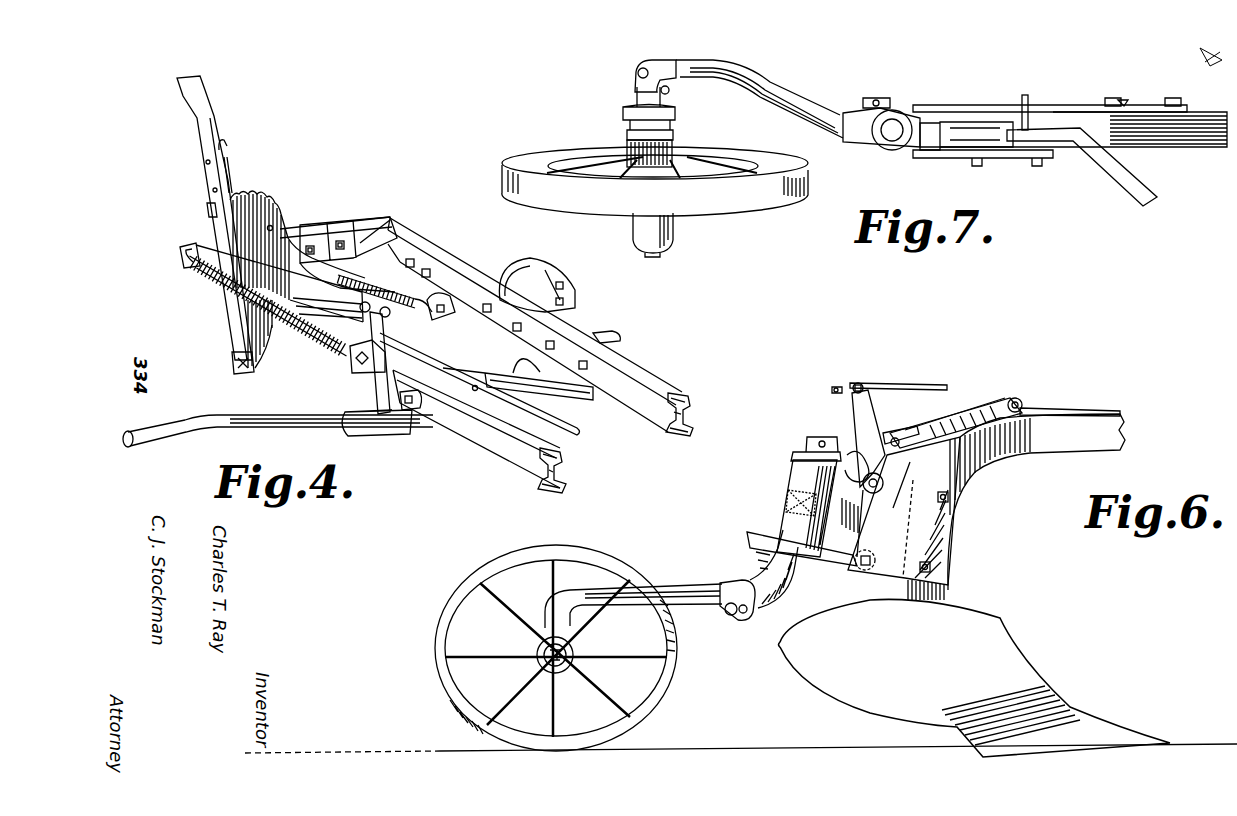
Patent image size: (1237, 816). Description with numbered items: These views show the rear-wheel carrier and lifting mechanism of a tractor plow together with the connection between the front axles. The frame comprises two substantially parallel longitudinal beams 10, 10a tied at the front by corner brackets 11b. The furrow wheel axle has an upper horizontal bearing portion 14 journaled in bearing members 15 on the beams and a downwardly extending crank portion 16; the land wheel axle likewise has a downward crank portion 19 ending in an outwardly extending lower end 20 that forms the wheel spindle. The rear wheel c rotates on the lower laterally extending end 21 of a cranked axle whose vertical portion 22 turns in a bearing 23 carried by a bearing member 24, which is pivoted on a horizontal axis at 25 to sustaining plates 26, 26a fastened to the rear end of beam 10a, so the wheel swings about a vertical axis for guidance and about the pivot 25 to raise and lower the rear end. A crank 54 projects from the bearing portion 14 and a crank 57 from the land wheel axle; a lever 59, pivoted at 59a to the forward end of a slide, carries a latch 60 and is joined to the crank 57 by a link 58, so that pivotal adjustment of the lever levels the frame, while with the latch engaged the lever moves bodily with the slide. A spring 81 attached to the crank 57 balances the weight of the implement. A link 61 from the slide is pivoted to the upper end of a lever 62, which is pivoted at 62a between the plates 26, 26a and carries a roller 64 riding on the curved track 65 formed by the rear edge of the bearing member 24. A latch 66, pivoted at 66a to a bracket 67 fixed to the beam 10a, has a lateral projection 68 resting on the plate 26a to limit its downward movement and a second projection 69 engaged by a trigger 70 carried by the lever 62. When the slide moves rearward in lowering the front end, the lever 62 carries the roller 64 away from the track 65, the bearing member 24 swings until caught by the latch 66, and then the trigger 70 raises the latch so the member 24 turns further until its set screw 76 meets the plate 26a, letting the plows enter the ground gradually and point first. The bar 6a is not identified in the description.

In FIG. 4, the longitudinal beam 10 is at (640, 378).
In FIG. 4, the longitudinal beam 10a is at (477, 446).
In FIG. 7, the longitudinal beam 10a is at (1172, 140).
In FIG. 6, the longitudinal beam 10a is at (1080, 447).
In FIG. 4, the front corner bracket 11b is at (363, 243).
In FIG. 4, the upper horizontal bearing portion 14 is at (517, 376).
In FIG. 4, the bearing member 15 is at (588, 330).
In FIG. 4, the crank portion 16 is at (567, 405).
In FIG. 4, the crank portion 19 is at (320, 428).
In FIG. 4, the outwardly extending lower end 20 is at (188, 430).
In FIG. 6, the lower laterally extending end 21 is at (547, 610).
In FIG. 7, the vertical portion 22 is at (890, 134).
In FIG. 6, the vertical portion 22 is at (810, 450).
In FIG. 6, the bearing 23 is at (787, 523).
In FIG. 6, the bearing member 24 is at (822, 545).
In FIG. 6, the pivot 25 is at (870, 554).
In FIG. 7, the sustaining plate 26 is at (1012, 160).
In FIG. 6, the sustaining plate 26 is at (918, 472).
In FIG. 7, the sustaining plate 26a is at (1052, 108).
In FIG. 4, the crank 54 is at (440, 328).
In FIG. 4, the crank 57 is at (377, 383).
In FIG. 4, the link 58 is at (307, 314).
In FIG. 4, the lever 59 is at (218, 230).
In FIG. 4, the pivot 59a is at (240, 364).
In FIG. 4, the latch 60 is at (231, 170).
In FIG. 6, the link 61 is at (893, 383).
In FIG. 6, the lever 62 is at (877, 420).
In FIG. 6, the pivot 62a is at (880, 444).
In FIG. 6, the roller 64 is at (875, 494).
In FIG. 6, the curve bearing surface 65 is at (853, 452).
In FIG. 7, the latch 66 is at (1100, 108).
In FIG. 6, the latch 66 is at (970, 415).
In FIG. 7, the pivot 66a is at (1122, 102).
In FIG. 6, the pivot 66a is at (1023, 401).
In FIG. 7, the bracket 67 is at (1150, 110).
In FIG. 6, the bracket 67 is at (1023, 410).
In FIG. 7, the lateral projection 68 is at (1027, 100).
In FIG. 6, the lateral projection 69 is at (937, 420).
In FIG. 6, the trigger 70 is at (908, 465).
In FIG. 7, the set screw 76 is at (872, 100).
In FIG. 6, the set screw 76 is at (790, 502).
In FIG. 4, the spring 81 is at (200, 280).
In FIG. 7, the bar 6a is at (1062, 148).
In FIG. 7, the rear wheel c is at (737, 205).